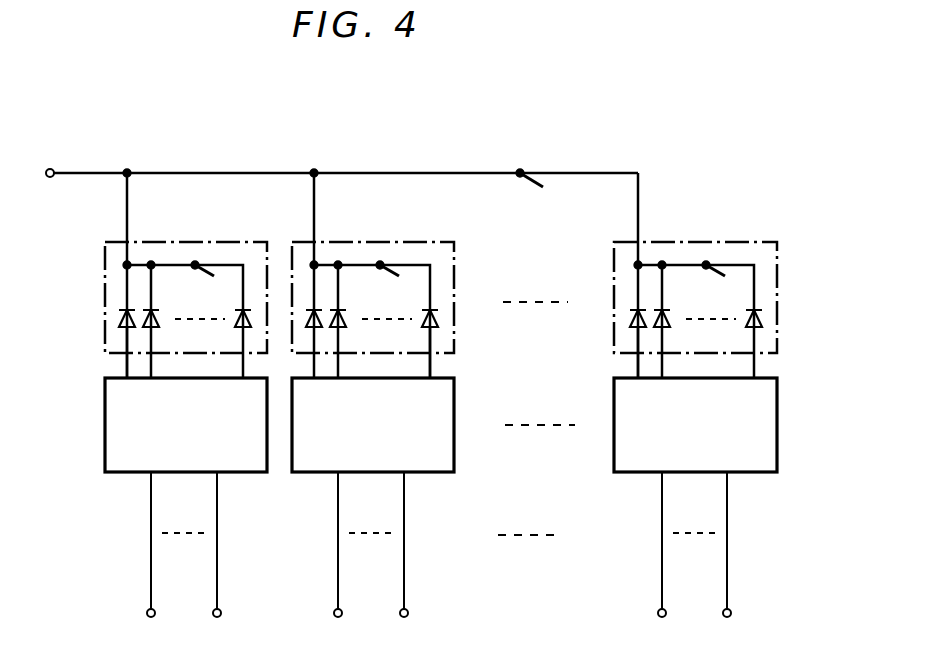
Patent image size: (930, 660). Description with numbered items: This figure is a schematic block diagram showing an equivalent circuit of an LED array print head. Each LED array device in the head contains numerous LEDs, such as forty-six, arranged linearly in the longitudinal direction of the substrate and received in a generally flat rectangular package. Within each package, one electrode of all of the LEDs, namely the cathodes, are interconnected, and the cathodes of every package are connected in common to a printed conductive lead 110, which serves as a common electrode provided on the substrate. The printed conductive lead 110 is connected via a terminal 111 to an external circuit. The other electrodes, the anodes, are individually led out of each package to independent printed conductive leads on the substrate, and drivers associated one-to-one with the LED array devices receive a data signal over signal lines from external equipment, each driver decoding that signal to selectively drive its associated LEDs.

The printed conductive lead 110 is at (213, 172).
The terminal 111 is at (54, 169).